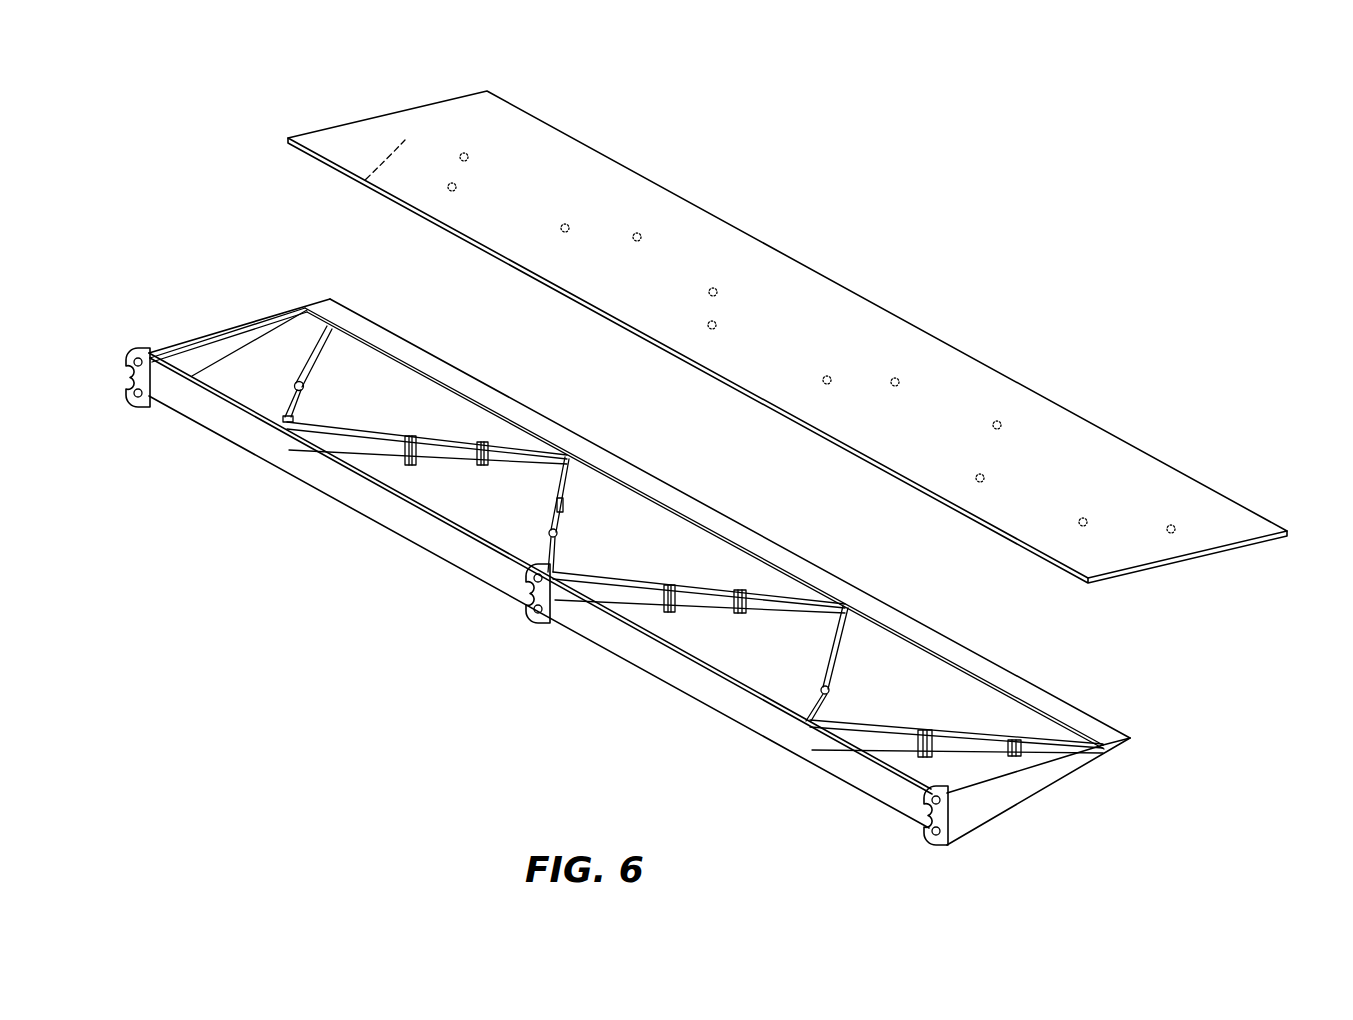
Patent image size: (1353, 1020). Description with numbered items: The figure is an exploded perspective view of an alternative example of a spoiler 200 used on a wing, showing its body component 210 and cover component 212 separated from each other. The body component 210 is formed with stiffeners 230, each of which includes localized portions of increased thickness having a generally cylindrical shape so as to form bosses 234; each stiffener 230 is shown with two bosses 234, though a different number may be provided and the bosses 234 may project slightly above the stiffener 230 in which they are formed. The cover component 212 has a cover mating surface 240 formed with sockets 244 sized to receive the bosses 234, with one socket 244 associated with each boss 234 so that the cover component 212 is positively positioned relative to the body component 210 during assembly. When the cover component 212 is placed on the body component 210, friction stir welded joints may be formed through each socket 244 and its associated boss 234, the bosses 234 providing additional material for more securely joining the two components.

The spoiler 200 is at (182, 153).
The body component 210 is at (481, 578).
The cover component 212 is at (664, 196).
The stiffener 230 is at (345, 455).
The boss 234 is at (480, 442).
The cover mating surface 240 is at (365, 180).
The socket 244 is at (1173, 538).